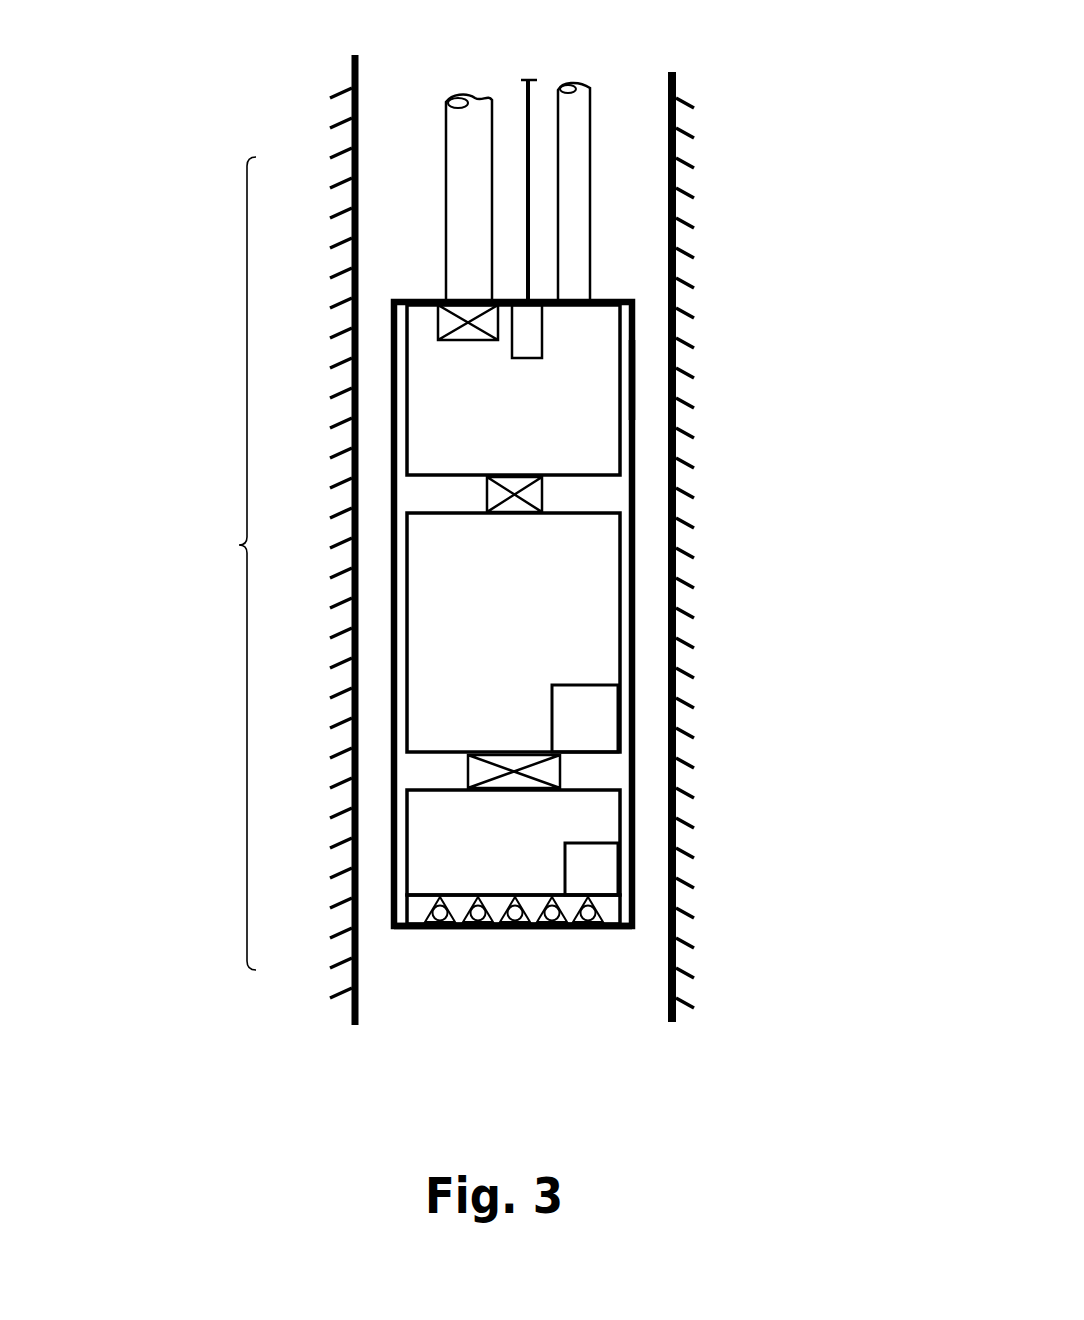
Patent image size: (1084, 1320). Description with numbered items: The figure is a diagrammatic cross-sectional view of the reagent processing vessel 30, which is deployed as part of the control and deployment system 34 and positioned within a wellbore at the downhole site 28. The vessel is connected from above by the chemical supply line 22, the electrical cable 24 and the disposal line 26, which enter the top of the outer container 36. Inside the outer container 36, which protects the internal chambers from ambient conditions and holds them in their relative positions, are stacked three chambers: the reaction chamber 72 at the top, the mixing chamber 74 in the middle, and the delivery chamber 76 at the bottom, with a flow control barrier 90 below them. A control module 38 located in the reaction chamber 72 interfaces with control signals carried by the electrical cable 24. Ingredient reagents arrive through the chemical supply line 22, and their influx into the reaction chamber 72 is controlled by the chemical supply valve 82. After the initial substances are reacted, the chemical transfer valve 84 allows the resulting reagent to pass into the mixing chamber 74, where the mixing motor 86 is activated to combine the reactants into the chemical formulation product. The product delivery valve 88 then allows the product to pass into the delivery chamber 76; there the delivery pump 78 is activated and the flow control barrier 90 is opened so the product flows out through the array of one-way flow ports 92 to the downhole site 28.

The chemical supply line 22 is at (445, 127).
The electrical cable 24 is at (532, 72).
The disposal line 26 is at (597, 71).
The downhole site 28 is at (498, 1036).
The reagent processing vessel 30 is at (637, 299).
The control and deployment system 34 is at (226, 563).
The outer container 36 is at (637, 373).
The control module 38 is at (575, 344).
The reaction chamber 72 is at (611, 467).
The mixing chamber 74 is at (602, 552).
The delivery chamber 76 is at (602, 834).
The delivery pump 78 is at (608, 858).
The chemical supply valve 82 is at (452, 374).
The chemical transfer valve 84 is at (562, 490).
The mixing motor 86 is at (539, 739).
The product delivery valve 88 is at (582, 763).
The flow control barrier 90 is at (620, 907).
The one-way flow ports 92 is at (515, 930).